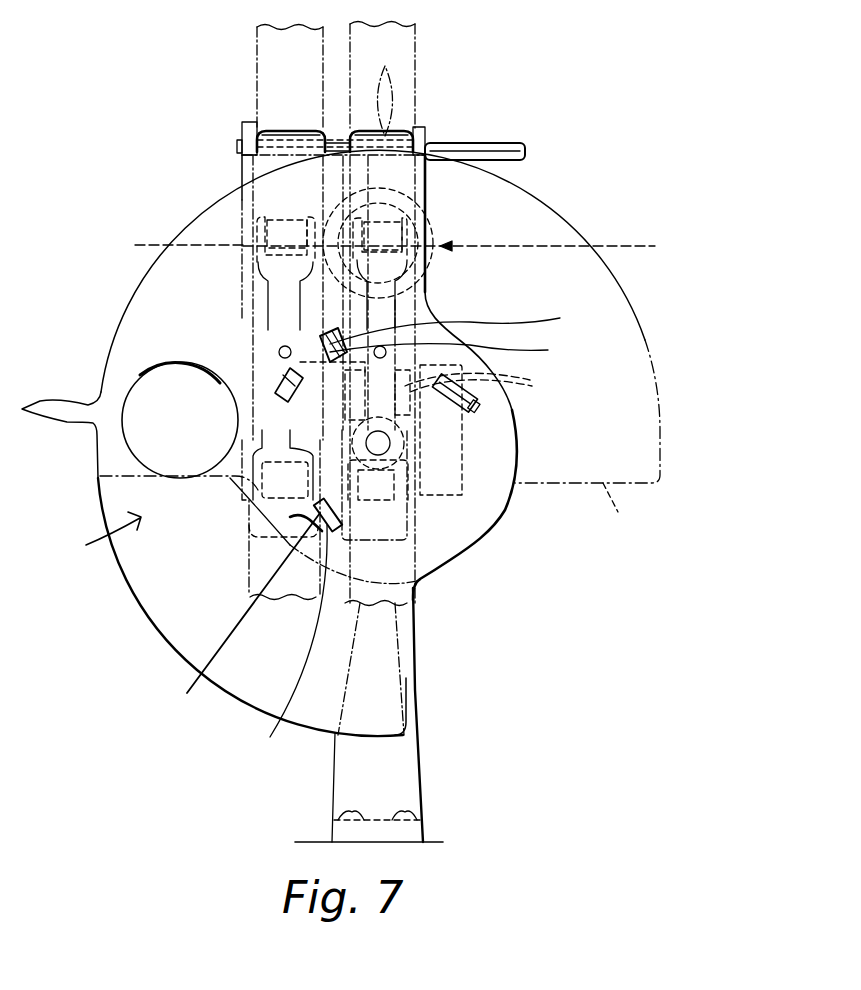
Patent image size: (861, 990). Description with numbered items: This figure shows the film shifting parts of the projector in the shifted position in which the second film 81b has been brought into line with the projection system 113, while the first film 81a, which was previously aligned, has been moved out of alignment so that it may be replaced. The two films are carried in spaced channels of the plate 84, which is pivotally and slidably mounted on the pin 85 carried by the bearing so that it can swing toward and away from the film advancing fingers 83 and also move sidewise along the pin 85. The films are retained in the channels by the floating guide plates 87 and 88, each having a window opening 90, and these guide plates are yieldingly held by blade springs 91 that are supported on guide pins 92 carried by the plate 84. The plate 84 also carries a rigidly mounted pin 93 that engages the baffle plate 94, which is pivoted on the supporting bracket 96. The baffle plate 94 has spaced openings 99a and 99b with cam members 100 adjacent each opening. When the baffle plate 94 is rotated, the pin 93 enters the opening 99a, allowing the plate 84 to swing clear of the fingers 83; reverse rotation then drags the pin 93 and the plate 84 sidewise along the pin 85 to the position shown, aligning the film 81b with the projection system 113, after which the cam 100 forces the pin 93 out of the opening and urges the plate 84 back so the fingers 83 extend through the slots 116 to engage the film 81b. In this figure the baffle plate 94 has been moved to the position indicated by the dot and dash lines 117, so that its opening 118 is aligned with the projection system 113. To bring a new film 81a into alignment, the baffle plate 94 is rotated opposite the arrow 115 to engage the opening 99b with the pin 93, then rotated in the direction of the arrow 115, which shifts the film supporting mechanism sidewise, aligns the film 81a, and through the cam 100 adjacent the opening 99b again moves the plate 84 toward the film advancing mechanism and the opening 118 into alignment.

The film 81a is at (265, 66).
The film 81b is at (404, 76).
The fingers 83 is at (532, 383).
The plate 84 is at (169, 247).
The pin 85 is at (480, 150).
The floating guide plate 87 is at (262, 161).
The floating guide plate 88 is at (407, 170).
The window openings 90 is at (282, 222).
The blade springs 91 is at (427, 301).
The guide pins 92 is at (280, 350).
The pin 93 is at (325, 342).
The baffle plate 94 is at (152, 603).
The supporting bracket 96 is at (403, 760).
The opening 99a is at (325, 623).
The opening 99b is at (445, 327).
The cam members 100 is at (373, 530).
The projection system 113 is at (458, 249).
The arrow 115 is at (93, 538).
The slots 116 is at (422, 430).
The dot and dash lines 117 is at (618, 512).
The opening 118 is at (137, 385).